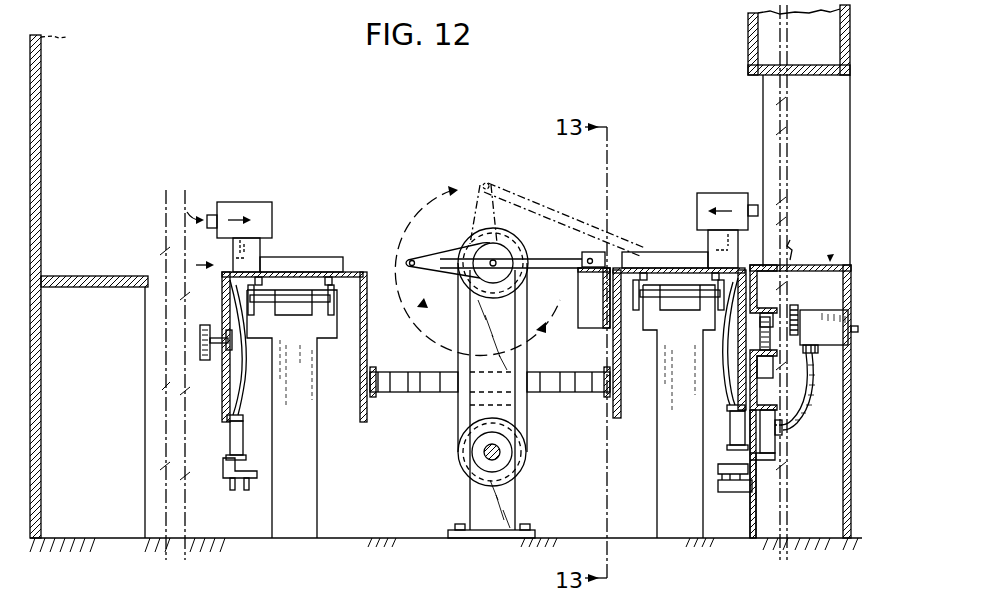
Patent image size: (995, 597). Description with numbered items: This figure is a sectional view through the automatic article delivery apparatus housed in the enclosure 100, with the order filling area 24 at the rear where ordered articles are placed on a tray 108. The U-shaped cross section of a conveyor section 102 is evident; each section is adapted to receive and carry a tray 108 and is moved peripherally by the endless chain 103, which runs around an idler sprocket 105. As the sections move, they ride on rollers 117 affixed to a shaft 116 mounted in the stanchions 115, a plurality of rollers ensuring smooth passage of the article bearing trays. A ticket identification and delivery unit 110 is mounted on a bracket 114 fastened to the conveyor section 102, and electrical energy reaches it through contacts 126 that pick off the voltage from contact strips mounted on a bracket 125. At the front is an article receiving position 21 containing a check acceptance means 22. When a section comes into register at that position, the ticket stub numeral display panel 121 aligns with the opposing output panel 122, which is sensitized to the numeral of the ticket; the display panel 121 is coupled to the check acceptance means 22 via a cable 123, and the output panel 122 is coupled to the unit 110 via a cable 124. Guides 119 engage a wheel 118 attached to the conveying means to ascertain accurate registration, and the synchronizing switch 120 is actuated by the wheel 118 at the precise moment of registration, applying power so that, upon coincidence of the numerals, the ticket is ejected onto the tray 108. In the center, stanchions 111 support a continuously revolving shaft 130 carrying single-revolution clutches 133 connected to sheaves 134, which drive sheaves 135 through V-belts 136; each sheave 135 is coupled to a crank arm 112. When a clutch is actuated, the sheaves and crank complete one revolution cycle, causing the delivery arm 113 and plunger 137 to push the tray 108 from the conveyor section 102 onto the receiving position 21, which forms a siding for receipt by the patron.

The enclosure 100 is at (38, 122).
The order filling area 24 is at (92, 276).
The ticket identification and delivery unit 110 is at (268, 206).
The bracket 114 is at (258, 250).
The tray 108 is at (319, 257).
The conveyor section 102 is at (363, 272).
The stanchion 115 is at (318, 462).
The shaft 116 is at (297, 302).
The roller 117 is at (337, 310).
The wheel 118 is at (204, 362).
The cable 124 is at (240, 390).
The output panel 122 is at (231, 436).
The contacts 126 is at (232, 490).
The bracket 125 is at (736, 492).
The endless chain 103 is at (386, 372).
The idler sprocket 105 is at (548, 372).
The stanchion 111 is at (505, 498).
The V-belt 136 is at (522, 312).
The sheave 135 is at (470, 240).
The crank arm 112 is at (478, 212).
The delivery plunger 113 is at (566, 218).
The plunger 137 is at (598, 254).
The shaft 130 is at (512, 465).
The single-revolution clutch 133 is at (515, 440).
The sheave 134 is at (473, 465).
The synchronizing switch 120 is at (765, 375).
The ticket stub numeral display panel 121 is at (780, 437).
The check acceptance means 22 is at (817, 318).
The article receiving position 21 is at (828, 247).
The guide 119 is at (783, 310).
The cable 123 is at (820, 392).